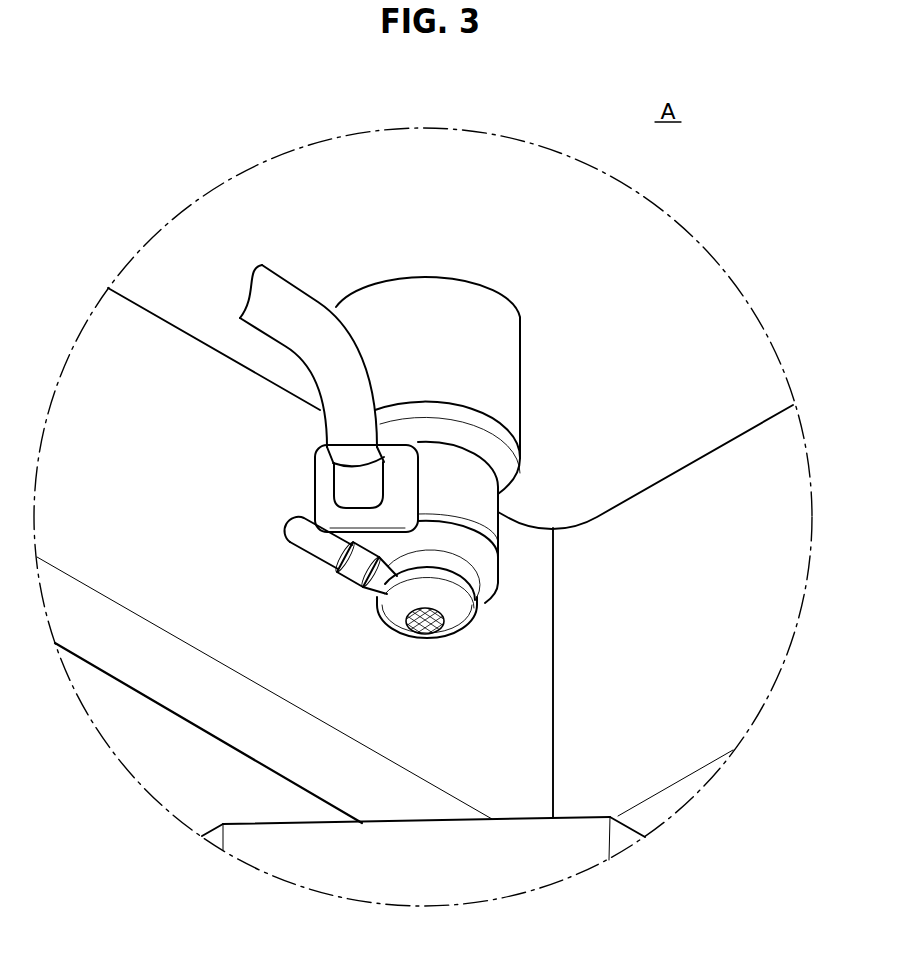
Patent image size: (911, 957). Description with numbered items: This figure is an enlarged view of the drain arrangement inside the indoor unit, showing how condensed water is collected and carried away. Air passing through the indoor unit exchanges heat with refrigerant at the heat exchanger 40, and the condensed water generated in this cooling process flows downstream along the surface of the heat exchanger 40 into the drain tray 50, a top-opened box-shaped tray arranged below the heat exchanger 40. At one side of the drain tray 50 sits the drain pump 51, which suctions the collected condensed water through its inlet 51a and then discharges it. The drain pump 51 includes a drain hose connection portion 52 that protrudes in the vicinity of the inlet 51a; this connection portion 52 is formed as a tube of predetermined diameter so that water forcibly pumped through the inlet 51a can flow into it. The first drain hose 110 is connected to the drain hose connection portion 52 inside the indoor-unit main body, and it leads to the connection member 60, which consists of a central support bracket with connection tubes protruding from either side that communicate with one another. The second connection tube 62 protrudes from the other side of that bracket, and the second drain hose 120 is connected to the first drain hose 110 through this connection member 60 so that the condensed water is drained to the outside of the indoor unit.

The heat exchanger 40 is at (175, 592).
The drain tray 50 is at (459, 872).
The drain pump 51 is at (460, 298).
The inlet 51a is at (432, 632).
The drain hose connection portion 52 is at (381, 580).
The connection member 60 is at (300, 488).
The second connection tube 62 is at (342, 470).
The first drain hose 110 is at (306, 569).
The second drain hose 120 is at (300, 303).